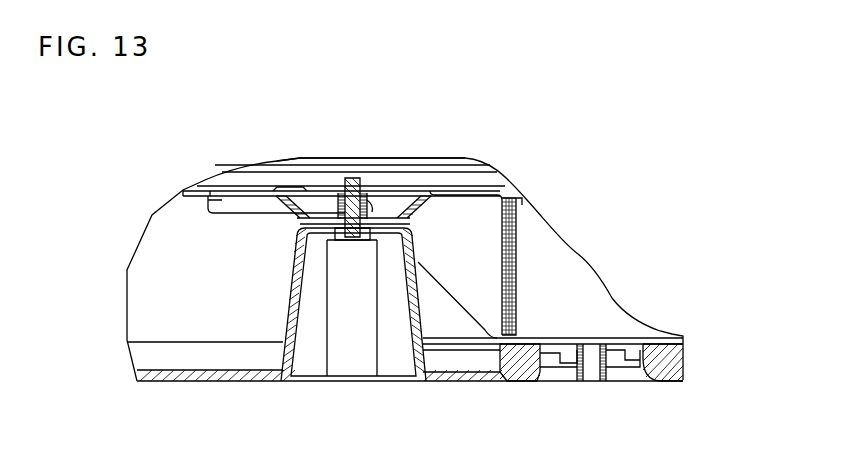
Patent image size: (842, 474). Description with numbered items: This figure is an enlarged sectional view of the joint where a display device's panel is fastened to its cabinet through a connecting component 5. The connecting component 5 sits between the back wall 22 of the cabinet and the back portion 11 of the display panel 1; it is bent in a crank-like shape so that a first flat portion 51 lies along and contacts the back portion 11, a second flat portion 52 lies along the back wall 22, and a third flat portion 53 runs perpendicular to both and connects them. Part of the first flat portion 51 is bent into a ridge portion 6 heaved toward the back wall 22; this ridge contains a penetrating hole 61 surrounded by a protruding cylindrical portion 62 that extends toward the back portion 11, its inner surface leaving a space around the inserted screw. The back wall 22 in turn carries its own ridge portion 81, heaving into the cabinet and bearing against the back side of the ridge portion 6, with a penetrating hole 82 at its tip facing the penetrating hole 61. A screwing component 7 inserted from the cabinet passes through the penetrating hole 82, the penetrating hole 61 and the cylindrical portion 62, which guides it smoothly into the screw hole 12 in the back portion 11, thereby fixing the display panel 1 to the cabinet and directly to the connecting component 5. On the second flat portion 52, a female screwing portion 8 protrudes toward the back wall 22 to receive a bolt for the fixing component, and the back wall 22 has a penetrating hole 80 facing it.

The display panel 1 is at (322, 180).
The connecting component 5 is at (532, 232).
The ridge portion 6 is at (290, 214).
The screwing component 7 is at (352, 178).
The female screwing portion 8 is at (586, 372).
The back portion 11 is at (262, 200).
The screw hole 12 is at (364, 193).
The back wall 22 is at (518, 368).
The first flat portion 51 is at (230, 198).
The second flat portion 52 is at (655, 336).
The third flat portion 53 is at (514, 272).
The penetrating hole 61 is at (362, 226).
The cylindrical portion 62 is at (370, 205).
The penetrating hole 80 is at (613, 362).
The ridge portion 81 is at (418, 250).
The penetrating hole 82 is at (345, 242).